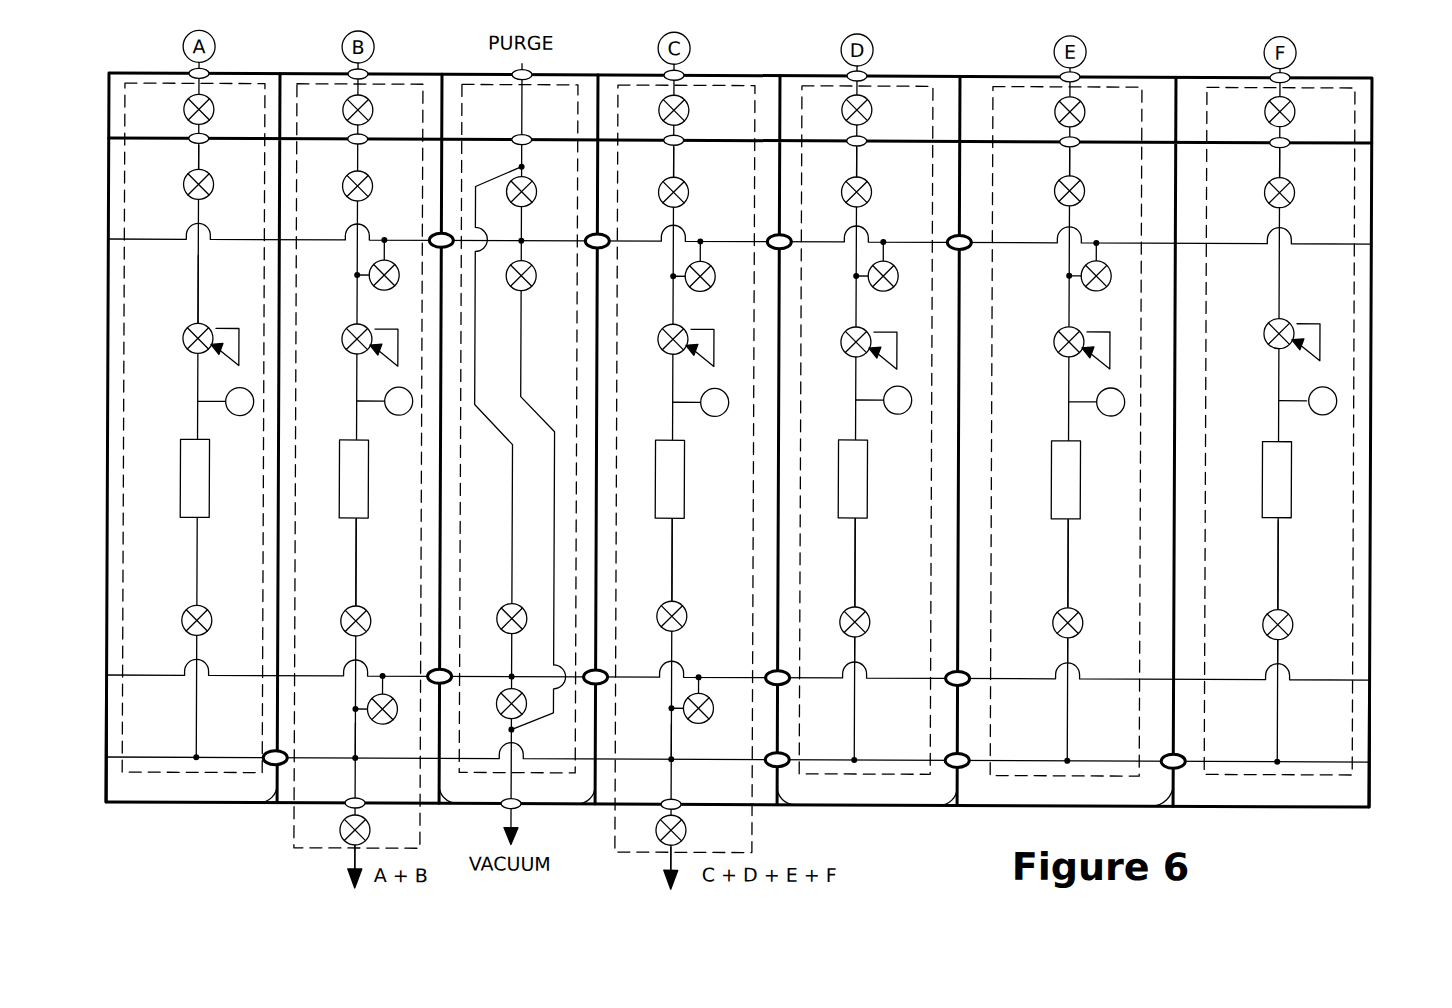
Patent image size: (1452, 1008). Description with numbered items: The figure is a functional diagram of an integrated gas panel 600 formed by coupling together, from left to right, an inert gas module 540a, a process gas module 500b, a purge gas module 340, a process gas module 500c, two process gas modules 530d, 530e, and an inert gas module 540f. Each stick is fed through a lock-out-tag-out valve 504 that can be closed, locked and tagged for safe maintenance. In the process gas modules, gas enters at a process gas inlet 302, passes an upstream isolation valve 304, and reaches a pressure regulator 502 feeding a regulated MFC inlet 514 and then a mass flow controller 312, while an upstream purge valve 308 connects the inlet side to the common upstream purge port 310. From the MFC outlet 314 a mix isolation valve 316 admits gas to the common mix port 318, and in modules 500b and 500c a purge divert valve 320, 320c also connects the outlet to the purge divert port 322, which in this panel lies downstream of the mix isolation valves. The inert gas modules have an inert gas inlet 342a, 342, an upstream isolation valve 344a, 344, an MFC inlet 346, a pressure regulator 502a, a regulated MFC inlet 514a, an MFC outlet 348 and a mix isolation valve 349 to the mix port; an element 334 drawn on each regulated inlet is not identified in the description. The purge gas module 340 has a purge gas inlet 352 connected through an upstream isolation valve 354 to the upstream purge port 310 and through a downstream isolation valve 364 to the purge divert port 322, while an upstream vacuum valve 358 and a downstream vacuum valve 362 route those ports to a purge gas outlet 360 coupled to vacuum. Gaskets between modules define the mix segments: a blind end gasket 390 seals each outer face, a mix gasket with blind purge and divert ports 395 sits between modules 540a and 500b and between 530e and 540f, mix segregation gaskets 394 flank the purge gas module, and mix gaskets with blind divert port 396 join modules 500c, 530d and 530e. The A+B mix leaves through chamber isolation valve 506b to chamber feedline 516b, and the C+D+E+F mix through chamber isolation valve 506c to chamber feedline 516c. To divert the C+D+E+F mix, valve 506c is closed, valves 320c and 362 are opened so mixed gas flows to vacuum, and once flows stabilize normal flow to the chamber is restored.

The integrated gas panel 600 is at (1393, 103).
The inert gas module 540a is at (183, 82).
The process gas module 500b is at (345, 82).
The purge gas module 340 is at (487, 82).
The process gas module 500c is at (657, 82).
The process gas module 530d is at (840, 82).
The process gas module 530e is at (1050, 82).
The inert gas module 540f is at (1308, 82).
The lock-out-tag-out valve 504 is at (185, 115).
The upstream isolation valve 344a is at (186, 180).
The inert gas inlet 342a is at (201, 158).
The upstream isolation valve 304 is at (370, 181).
The process gas inlet 302 is at (680, 158).
The inert gas inlet 342 is at (1280, 163).
The upstream isolation valve 344 is at (1270, 189).
The purge gas inlet 352 is at (524, 160).
The upstream isolation valve 354 is at (533, 195).
The upstream vacuum valve 358 is at (510, 281).
The purge gas outlet 360 is at (537, 718).
The downstream isolation valve 364 is at (510, 602).
The downstream vacuum valve 362 is at (502, 701).
The upstream purge port 310 is at (1330, 243).
The upstream purge valve 308 is at (396, 282).
The MFC inlet 346 is at (200, 273).
The MFC outlet 348 is at (1279, 557).
The pressure regulator 502a is at (186, 336).
The pressure regulator 502 is at (350, 332).
The regulated MFC inlet 514a is at (197, 402).
The regulated MFC inlet 514 is at (675, 375).
The pressure transducer 334 is at (240, 415).
The mass flow controller 312 is at (190, 447).
The MFC outlet 314 is at (356, 563).
The mix isolation valve 316 is at (370, 615).
The mix isolation valve 349 is at (190, 610).
The mix port 318 is at (356, 737).
The purge divert valve 320 is at (384, 723).
The purge divert valve 320c is at (698, 720).
The purge divert port 322 is at (158, 671).
The chamber isolation valve 506b is at (374, 831).
The chamber isolation valve 506c is at (688, 826).
The chamber feedline 516b is at (352, 859).
The chamber feedline 516c is at (668, 855).
The blind end gasket 390 is at (108, 803).
The mix segregation gasket 394 is at (457, 803).
The mix gasket with blind purge and divert ports 395 is at (265, 803).
The mix gasket with blind purge divert port 396 is at (795, 803).